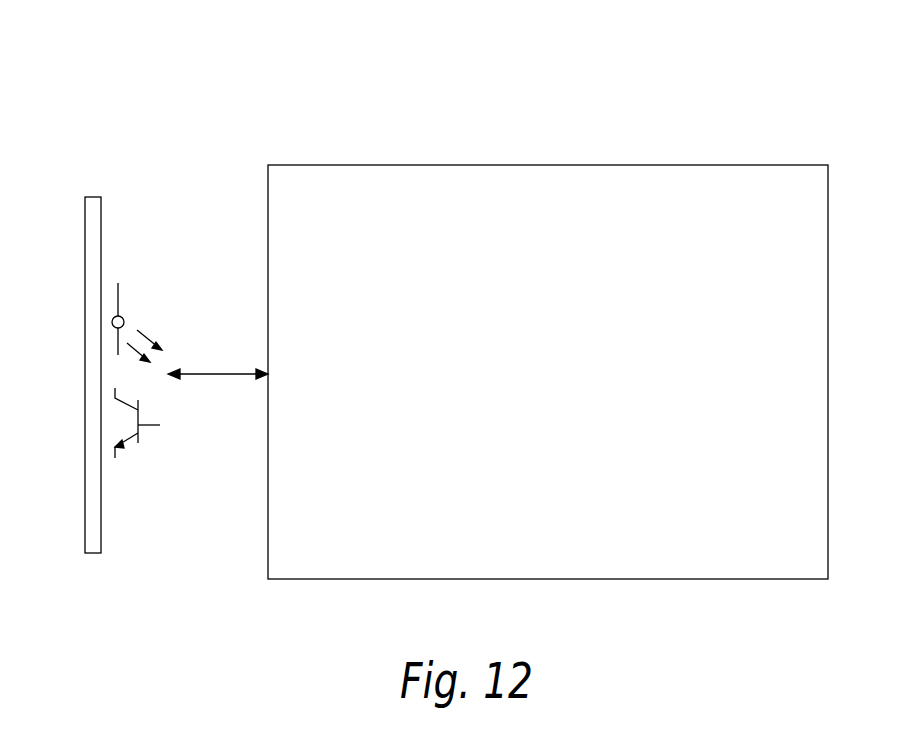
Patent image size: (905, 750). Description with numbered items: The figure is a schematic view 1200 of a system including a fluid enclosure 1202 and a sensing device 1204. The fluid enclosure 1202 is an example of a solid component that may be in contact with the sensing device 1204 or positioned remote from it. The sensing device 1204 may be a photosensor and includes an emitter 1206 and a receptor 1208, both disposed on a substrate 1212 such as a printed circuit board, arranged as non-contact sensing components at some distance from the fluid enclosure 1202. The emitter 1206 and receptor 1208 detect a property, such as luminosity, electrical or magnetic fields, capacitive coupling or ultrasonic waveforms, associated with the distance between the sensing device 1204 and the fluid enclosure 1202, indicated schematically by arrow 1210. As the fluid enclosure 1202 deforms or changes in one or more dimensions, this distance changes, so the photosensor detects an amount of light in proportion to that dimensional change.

The schematic view 1200 is at (723, 73).
The fluid enclosure 1202 is at (548, 164).
The sensing device 1204 is at (193, 203).
The emitter 1206 is at (118, 298).
The receptor 1208 is at (127, 440).
The arrow 1210 is at (222, 368).
The substrate 1212 is at (85, 372).